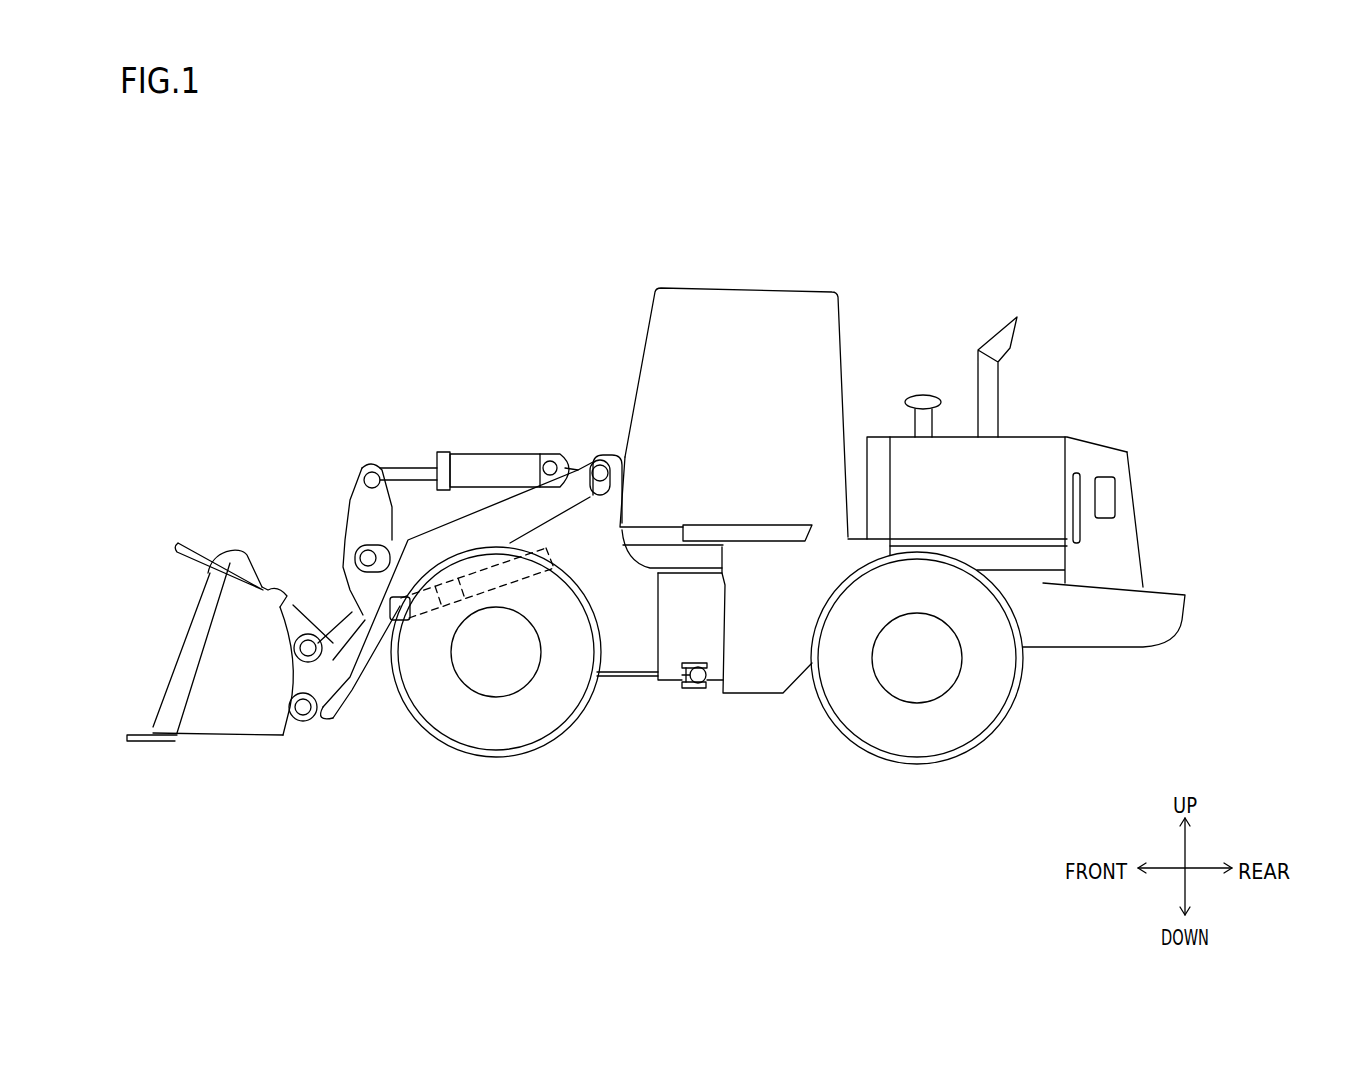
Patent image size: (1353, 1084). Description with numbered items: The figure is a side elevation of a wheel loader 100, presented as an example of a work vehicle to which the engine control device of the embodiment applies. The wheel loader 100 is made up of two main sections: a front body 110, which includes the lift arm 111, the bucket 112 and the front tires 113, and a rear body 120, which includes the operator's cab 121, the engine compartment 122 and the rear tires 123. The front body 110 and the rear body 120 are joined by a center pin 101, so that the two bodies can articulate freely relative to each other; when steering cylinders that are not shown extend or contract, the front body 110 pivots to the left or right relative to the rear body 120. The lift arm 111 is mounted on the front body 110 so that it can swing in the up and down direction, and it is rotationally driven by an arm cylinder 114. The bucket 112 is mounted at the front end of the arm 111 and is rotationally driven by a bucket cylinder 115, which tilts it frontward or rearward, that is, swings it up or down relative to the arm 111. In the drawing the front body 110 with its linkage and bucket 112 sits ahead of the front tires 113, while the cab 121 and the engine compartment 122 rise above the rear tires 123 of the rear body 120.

The wheel loader 100 is at (1098, 672).
The center pin 101 is at (695, 688).
The front body 110 is at (585, 490).
The lift arm 111 is at (340, 617).
The bucket 112 is at (222, 565).
The tires 113 is at (490, 722).
The arm cylinder 114 is at (445, 617).
The bucket cylinder 115 is at (483, 450).
The rear body 120 is at (1157, 608).
The operator's cab 121 is at (690, 312).
The engine compartment 122 is at (1050, 455).
The tires 123 is at (935, 735).